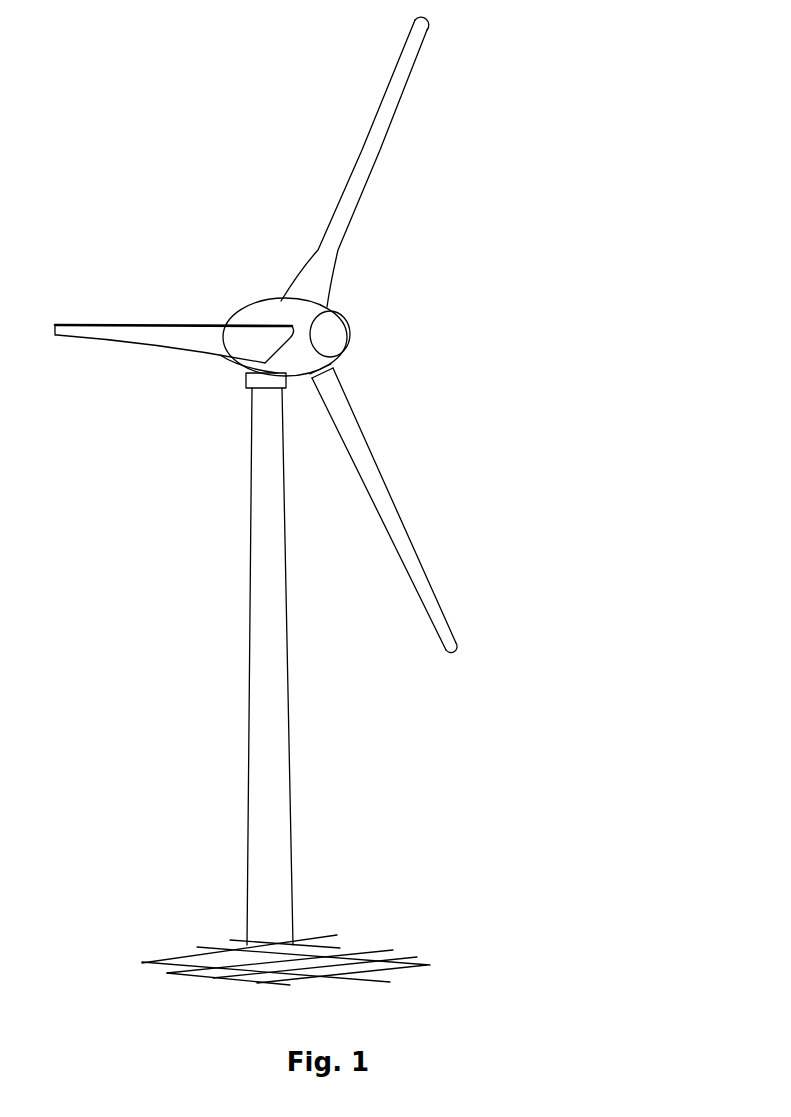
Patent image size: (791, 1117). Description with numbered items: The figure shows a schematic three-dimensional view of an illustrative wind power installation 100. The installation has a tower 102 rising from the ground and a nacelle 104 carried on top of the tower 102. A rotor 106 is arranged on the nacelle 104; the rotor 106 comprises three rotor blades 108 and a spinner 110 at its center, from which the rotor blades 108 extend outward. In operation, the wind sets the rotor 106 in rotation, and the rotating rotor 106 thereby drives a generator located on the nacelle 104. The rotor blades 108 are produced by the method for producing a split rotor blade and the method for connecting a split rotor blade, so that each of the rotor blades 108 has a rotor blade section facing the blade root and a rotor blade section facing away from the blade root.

The wind power installation 100 is at (308, 500).
The tower 102 is at (275, 752).
The nacelle 104 is at (260, 308).
The rotor 106 is at (308, 334).
The rotor blades 108 is at (382, 128).
The spinner 110 is at (335, 333).